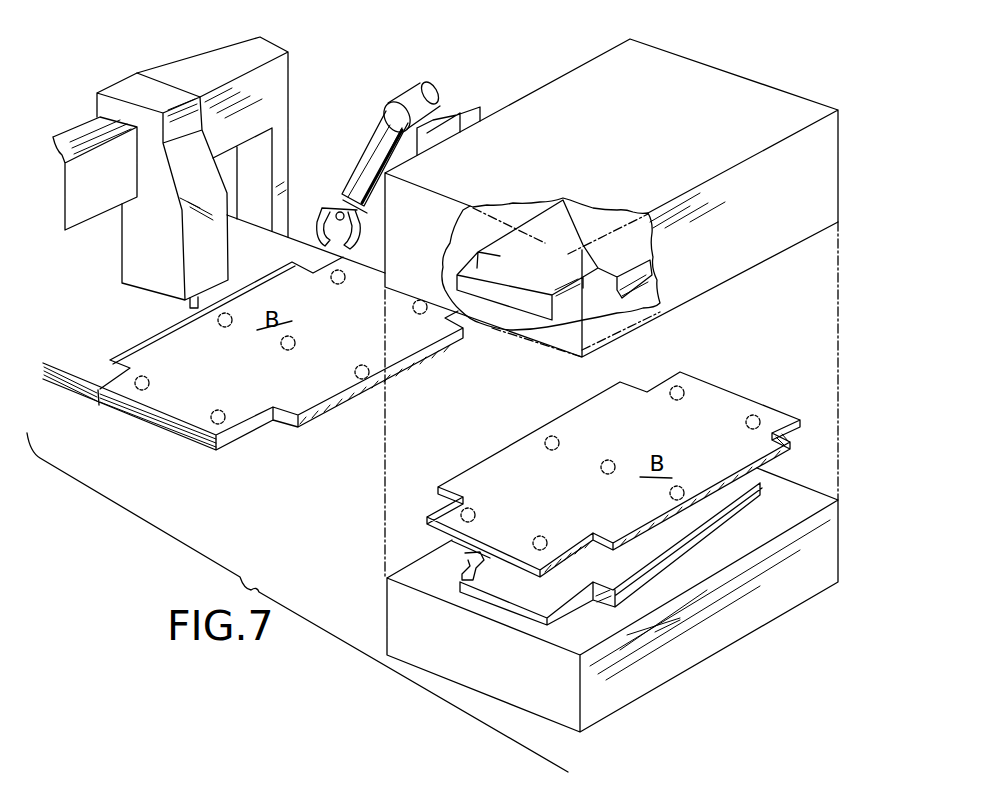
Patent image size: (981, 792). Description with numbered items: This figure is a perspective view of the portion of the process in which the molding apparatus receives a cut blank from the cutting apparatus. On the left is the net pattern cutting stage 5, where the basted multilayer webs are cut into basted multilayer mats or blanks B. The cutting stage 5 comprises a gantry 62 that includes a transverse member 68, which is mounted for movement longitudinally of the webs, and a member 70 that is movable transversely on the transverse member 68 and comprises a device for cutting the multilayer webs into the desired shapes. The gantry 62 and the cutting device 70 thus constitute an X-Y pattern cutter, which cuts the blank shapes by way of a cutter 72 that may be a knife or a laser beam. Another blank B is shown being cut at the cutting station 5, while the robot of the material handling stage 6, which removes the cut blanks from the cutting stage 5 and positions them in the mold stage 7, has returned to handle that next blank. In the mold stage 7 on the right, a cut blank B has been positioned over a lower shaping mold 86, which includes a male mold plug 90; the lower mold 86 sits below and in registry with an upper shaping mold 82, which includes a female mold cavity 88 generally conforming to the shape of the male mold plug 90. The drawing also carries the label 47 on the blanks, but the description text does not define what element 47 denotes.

The net pattern cutting stage 5 is at (178, 60).
The material handling stage 6 is at (417, 73).
The mold stage 7 is at (523, 82).
The plate 47 is at (213, 413).
The gantry 62 is at (298, 68).
The transverse member 68 is at (82, 136).
The cutting device 70 is at (136, 91).
The cutter 72 is at (190, 304).
The upper shaping mold 82 is at (831, 135).
The lower shaping mold 86 is at (403, 603).
The female mold cavity 88 is at (563, 303).
The male mold plug 90 is at (452, 541).